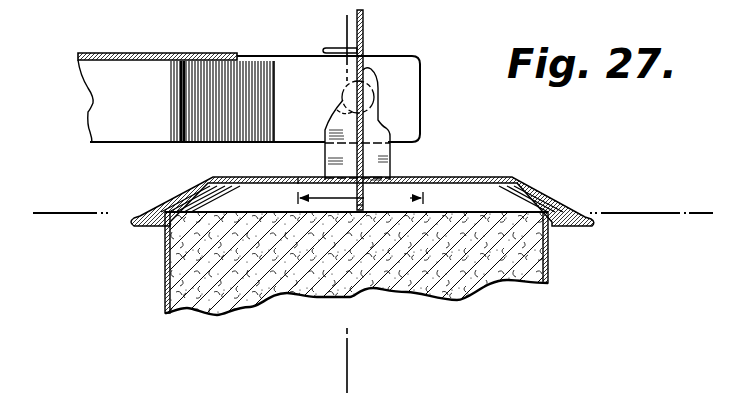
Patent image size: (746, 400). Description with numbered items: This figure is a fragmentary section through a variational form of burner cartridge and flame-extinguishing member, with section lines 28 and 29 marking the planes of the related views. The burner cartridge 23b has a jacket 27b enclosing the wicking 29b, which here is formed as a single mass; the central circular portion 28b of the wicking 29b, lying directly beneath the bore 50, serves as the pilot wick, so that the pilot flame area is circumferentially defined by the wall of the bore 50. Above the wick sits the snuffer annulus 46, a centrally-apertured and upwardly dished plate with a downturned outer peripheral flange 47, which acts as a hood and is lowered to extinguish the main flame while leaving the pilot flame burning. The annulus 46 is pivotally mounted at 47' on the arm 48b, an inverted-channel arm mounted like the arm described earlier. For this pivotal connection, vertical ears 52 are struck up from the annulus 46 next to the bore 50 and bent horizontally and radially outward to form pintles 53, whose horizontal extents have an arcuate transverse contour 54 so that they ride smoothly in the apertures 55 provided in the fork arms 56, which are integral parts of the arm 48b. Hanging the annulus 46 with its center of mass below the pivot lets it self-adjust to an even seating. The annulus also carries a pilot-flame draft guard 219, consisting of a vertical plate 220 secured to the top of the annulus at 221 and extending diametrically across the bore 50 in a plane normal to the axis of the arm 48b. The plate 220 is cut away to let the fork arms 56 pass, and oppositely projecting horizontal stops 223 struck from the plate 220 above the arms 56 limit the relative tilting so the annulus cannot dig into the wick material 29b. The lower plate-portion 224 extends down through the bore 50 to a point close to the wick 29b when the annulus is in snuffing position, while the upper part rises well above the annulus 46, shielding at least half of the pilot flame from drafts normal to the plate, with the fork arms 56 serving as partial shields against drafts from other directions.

The section line 28- 28 is at (343, 27).
The section line 29- 29 is at (47, 244).
The arm 48b is at (87, 101).
The fork arms 56 is at (207, 58).
The pilot-flame draft guard 219 is at (369, 38).
The horizontal stops 223 is at (331, 55).
The pintles 53 is at (348, 96).
The apertures 55 is at (373, 90).
The arcuate transverse cross-sectional contour 54 is at (340, 118).
The pivotal mounting 47' is at (418, 108).
The vertical plate 220 is at (363, 133).
The vertical ears 52 is at (332, 158).
The securing point of plate to annulus 221 is at (393, 176).
The annulus 46 is at (486, 178).
The downturned outer peripheral flange 47 is at (353, 193).
The bore 50 is at (300, 184).
The central circular portion of the wicking 28b is at (360, 198).
The plate-portion 224 is at (354, 205).
The wicking 29b is at (470, 255).
The burner cartridge 23b is at (163, 289).
The jacket 27b is at (550, 270).